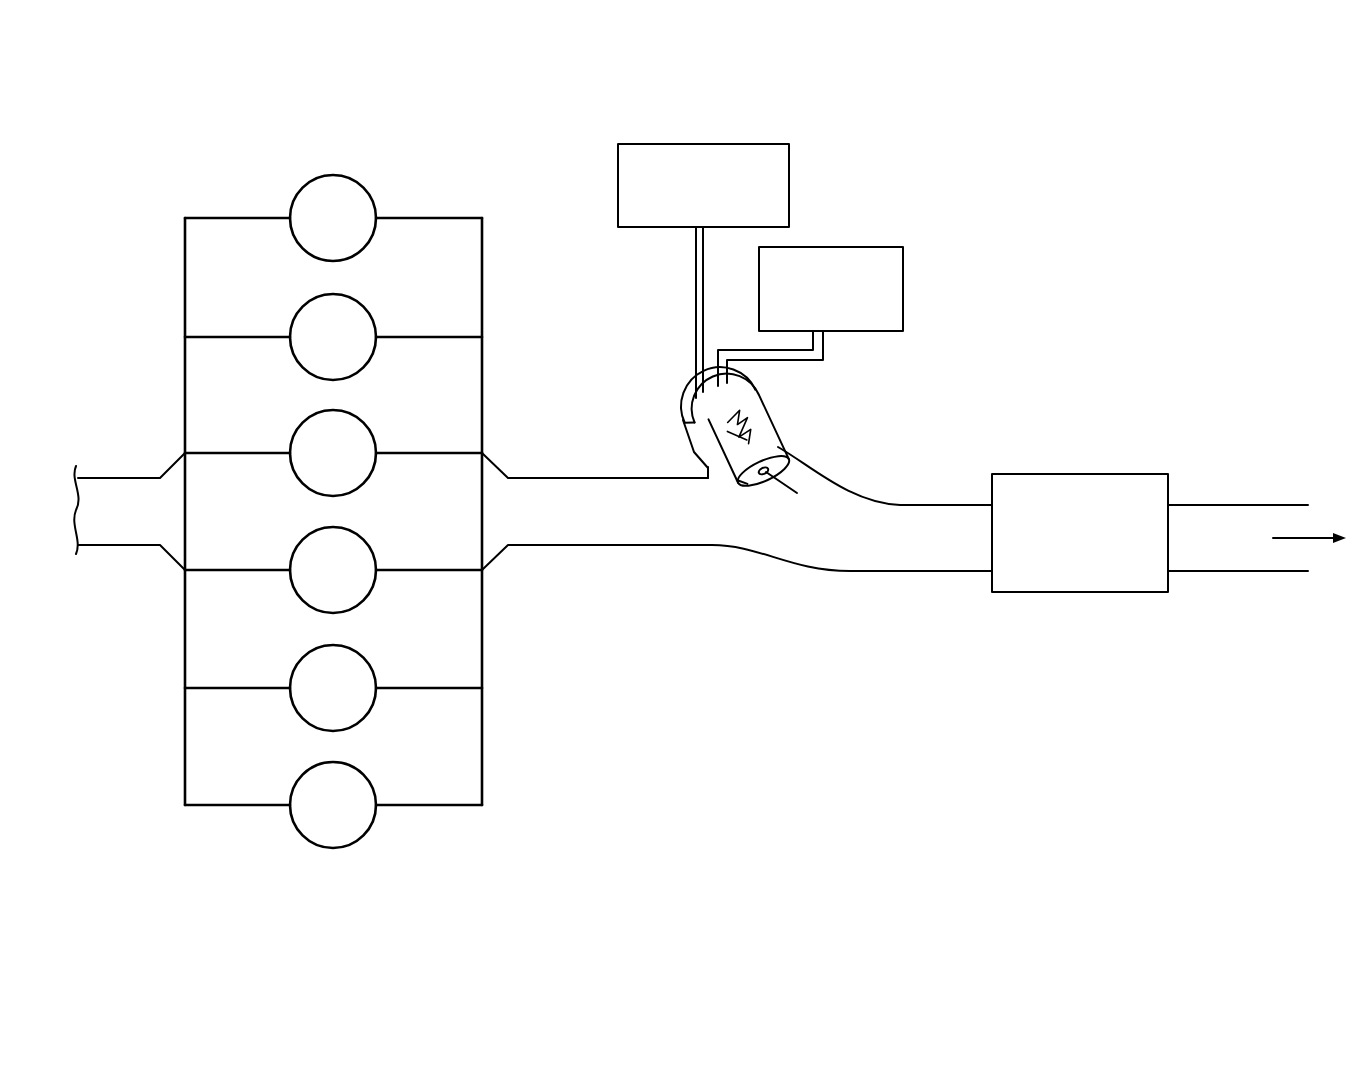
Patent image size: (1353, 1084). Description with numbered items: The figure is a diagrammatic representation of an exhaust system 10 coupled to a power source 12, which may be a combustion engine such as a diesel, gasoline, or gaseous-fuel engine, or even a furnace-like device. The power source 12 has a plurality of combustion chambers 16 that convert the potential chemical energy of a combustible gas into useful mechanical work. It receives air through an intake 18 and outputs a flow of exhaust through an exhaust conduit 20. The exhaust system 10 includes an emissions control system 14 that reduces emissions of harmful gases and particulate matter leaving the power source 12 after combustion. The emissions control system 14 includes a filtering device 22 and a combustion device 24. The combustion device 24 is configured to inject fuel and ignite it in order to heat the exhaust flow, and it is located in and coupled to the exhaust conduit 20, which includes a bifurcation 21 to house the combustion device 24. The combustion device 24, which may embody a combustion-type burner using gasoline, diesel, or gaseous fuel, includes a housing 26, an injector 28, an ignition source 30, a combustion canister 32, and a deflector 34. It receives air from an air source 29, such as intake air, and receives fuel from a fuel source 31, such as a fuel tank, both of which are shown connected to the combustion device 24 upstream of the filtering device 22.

The exhaust system 10 is at (312, 123).
The power source 12 is at (493, 191).
The emissions control system 14 is at (1001, 381).
The combustion chambers 16 is at (349, 235).
The intake 18 is at (121, 546).
The exhaust conduit 20 is at (565, 476).
The bifurcation 21 is at (702, 462).
The filtering device 22 is at (1094, 550).
The combustion device 24 is at (651, 396).
The housing 26 is at (746, 393).
The injector 28 is at (774, 437).
The air source 29 is at (847, 305).
The ignition source 30 is at (757, 425).
The fuel source 31 is at (719, 200).
The combustion canister 32 is at (736, 476).
The deflector 34 is at (786, 490).